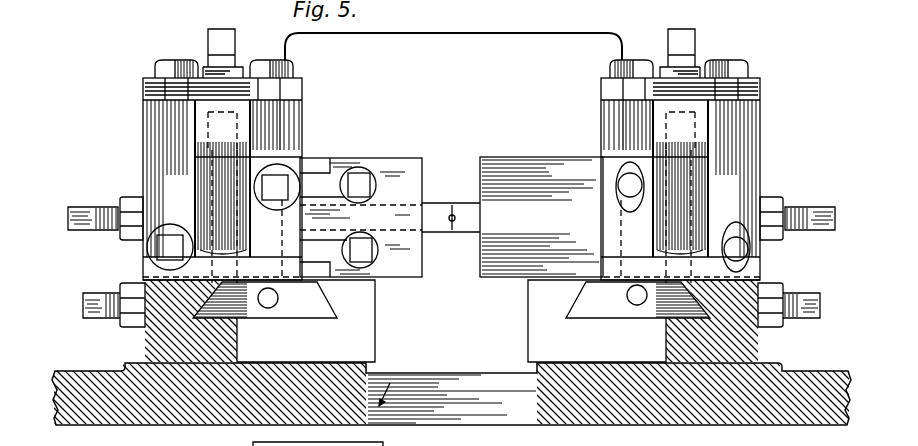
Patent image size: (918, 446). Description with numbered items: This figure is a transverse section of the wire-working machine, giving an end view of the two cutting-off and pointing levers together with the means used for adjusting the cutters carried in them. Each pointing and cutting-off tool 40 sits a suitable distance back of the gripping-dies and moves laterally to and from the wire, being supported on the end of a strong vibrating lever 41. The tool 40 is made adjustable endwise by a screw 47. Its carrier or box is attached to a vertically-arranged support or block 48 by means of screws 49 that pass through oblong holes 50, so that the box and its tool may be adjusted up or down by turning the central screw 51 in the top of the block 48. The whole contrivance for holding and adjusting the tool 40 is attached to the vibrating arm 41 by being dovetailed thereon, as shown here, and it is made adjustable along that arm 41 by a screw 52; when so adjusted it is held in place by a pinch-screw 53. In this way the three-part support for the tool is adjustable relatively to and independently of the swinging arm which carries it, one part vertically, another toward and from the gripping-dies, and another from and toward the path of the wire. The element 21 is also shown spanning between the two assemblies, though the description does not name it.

The conduit 21 is at (453, 61).
The pointing and cutting-off tool 40 is at (451, 217).
The vibrating lever 41 is at (451, 300).
The screw 47 is at (451, 213).
The support or block 48 is at (451, 171).
The screws 49 is at (223, 217).
The oblong holes 50 is at (746, 262).
The central screw 51 is at (460, 53).
The screw 52 is at (452, 296).
The pinch-screw 53 is at (448, 305).